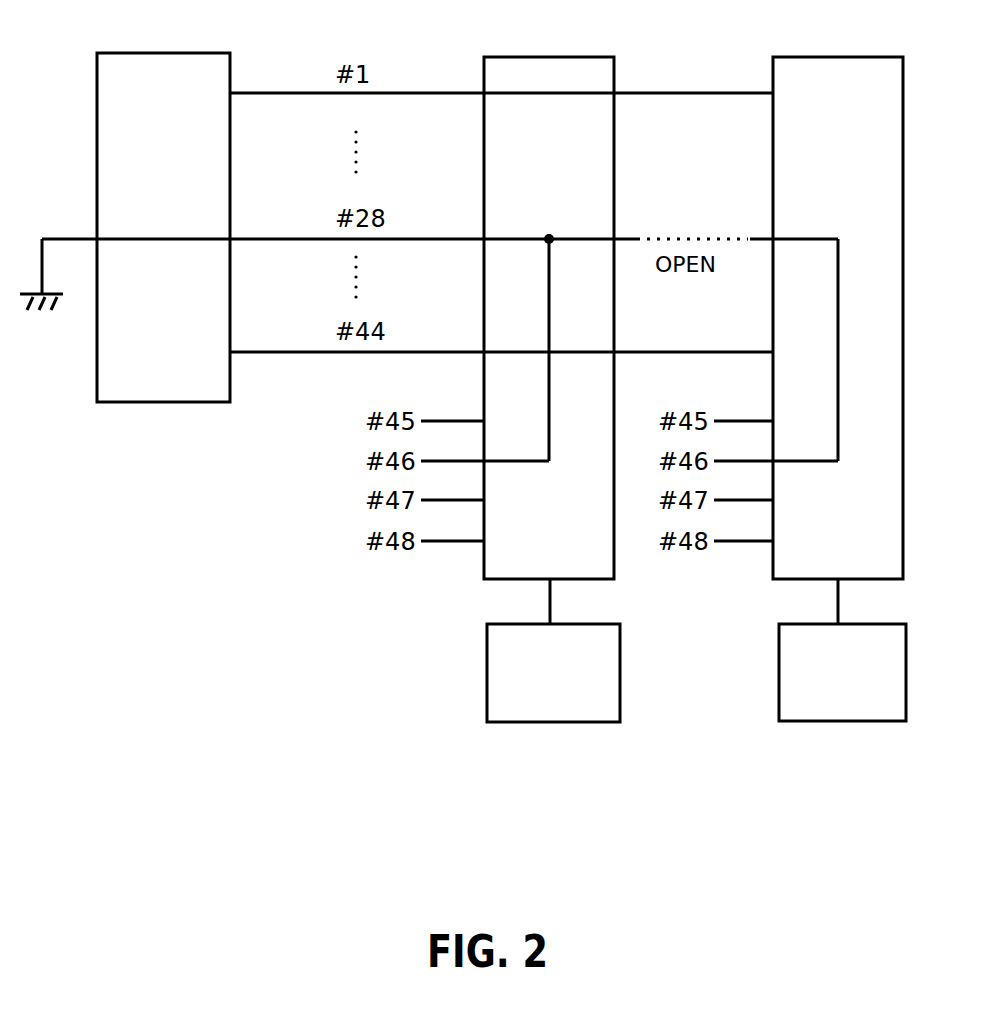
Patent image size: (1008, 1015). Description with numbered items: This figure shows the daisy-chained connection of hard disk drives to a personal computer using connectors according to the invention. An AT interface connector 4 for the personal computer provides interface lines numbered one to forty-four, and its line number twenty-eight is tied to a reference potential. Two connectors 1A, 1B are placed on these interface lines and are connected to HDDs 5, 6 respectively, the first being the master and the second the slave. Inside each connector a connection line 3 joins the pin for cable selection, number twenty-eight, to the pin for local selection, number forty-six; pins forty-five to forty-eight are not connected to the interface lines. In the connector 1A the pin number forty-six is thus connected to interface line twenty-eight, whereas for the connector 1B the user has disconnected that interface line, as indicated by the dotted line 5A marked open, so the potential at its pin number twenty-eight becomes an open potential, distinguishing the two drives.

The AT interface connector 4 is at (157, 57).
The connector 1A is at (548, 60).
The connector 1B is at (841, 60).
The connection line 3 is at (551, 393).
The dotted line 5A is at (673, 232).
The HDD 5 is at (540, 724).
The HDD 6 is at (826, 723).